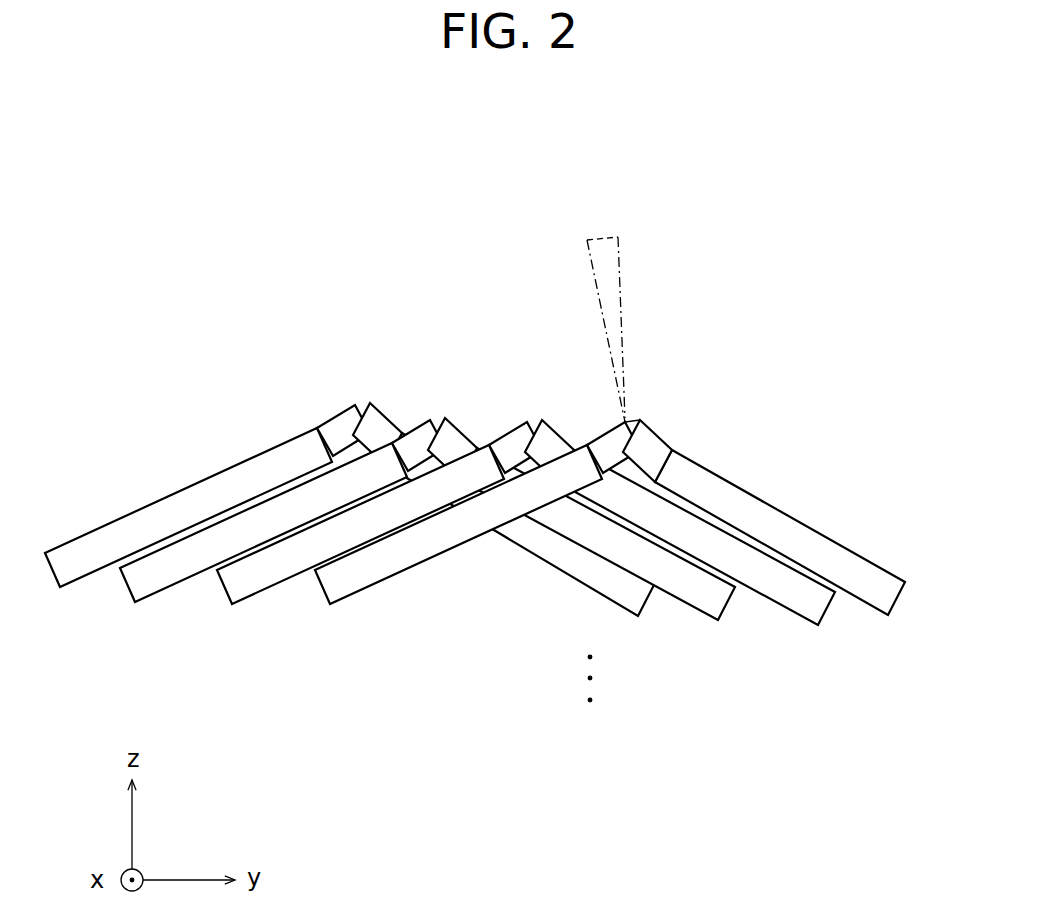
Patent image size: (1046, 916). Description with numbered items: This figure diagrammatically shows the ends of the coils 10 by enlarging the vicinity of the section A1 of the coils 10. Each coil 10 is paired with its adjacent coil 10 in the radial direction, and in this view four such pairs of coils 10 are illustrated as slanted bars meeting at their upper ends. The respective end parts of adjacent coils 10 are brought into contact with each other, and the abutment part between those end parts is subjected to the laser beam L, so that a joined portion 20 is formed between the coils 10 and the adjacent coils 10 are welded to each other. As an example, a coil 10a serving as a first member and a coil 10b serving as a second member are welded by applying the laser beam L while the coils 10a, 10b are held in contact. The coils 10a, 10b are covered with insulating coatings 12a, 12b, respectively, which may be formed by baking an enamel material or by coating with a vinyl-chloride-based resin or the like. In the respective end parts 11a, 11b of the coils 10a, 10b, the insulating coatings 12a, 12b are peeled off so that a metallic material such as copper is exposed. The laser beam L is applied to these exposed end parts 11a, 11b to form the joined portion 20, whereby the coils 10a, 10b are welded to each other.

The coils 10 is at (503, 511).
The coil (first member) 10a is at (373, 562).
The coil (second member) 10b is at (808, 569).
The end part 11a is at (593, 440).
The end part 11b is at (662, 442).
The insulating coating 12a is at (455, 532).
The insulating coating 12b is at (757, 504).
The joined portion 20 is at (617, 423).
The laser beam L is at (620, 277).
The section A1 is at (538, 160).